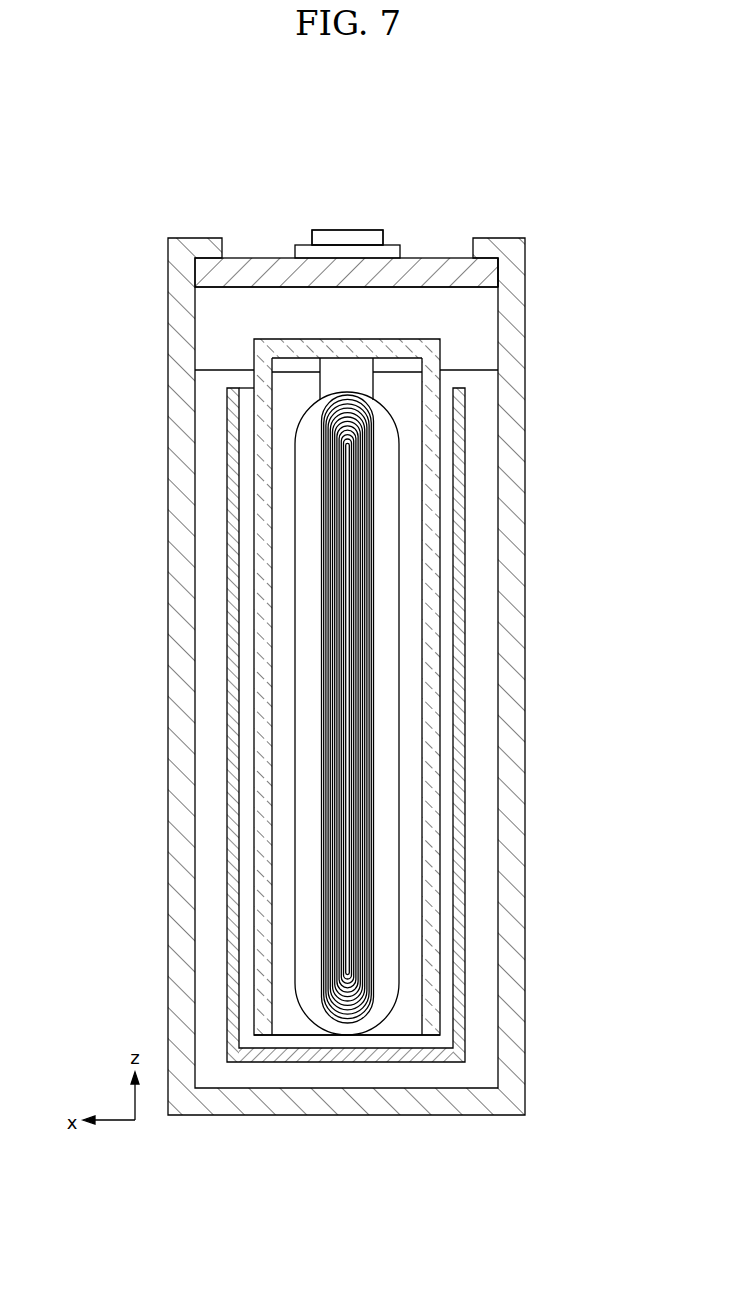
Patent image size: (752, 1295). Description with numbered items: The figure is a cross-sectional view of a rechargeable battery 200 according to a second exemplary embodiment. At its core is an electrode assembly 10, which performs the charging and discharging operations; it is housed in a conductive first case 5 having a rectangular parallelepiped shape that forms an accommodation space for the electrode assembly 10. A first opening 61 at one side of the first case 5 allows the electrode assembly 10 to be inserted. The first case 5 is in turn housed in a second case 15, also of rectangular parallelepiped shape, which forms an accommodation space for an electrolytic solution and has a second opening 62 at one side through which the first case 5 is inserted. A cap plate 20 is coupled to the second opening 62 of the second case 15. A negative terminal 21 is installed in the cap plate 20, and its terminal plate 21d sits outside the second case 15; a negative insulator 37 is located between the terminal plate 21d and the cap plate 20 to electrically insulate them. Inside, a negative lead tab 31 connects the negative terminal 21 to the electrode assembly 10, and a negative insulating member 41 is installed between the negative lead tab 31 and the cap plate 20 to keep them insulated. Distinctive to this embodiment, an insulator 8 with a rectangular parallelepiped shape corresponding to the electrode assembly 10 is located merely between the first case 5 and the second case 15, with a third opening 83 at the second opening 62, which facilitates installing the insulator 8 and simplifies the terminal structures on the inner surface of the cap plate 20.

The rechargeable battery 200 is at (340, 102).
The first case 5 is at (430, 597).
The insulator 8 is at (232, 710).
The electrode assembly 10 is at (385, 712).
The second case 15 is at (182, 354).
The cap plate 20 is at (442, 268).
The negative terminal 21 is at (351, 212).
The terminal plate 21d is at (375, 233).
The negative lead tab 31 is at (352, 382).
The negative insulator 37 is at (302, 245).
The negative insulating member 41 is at (252, 293).
The first opening 61 is at (415, 1013).
The second opening 62 is at (488, 290).
The third opening 83 is at (243, 402).